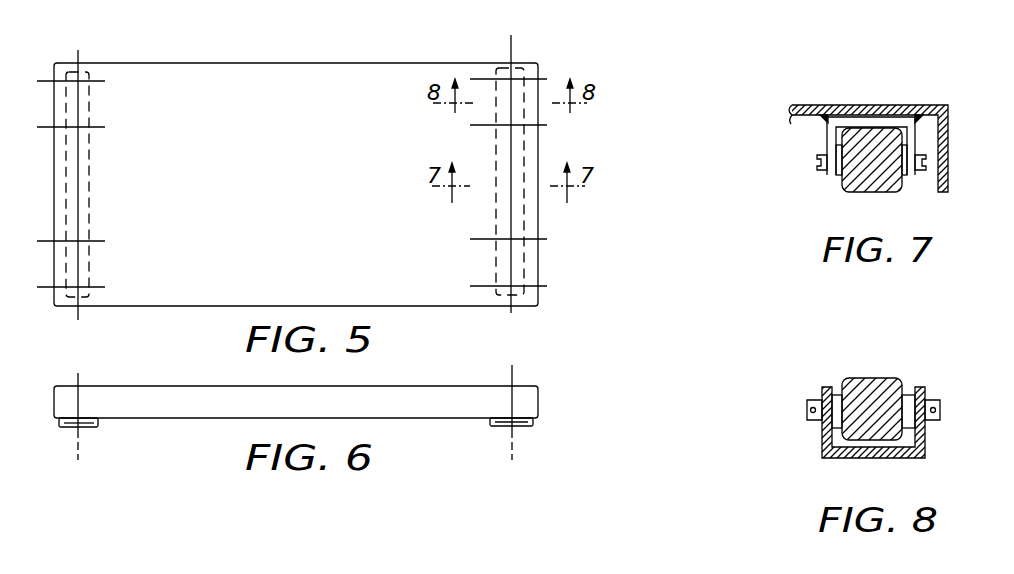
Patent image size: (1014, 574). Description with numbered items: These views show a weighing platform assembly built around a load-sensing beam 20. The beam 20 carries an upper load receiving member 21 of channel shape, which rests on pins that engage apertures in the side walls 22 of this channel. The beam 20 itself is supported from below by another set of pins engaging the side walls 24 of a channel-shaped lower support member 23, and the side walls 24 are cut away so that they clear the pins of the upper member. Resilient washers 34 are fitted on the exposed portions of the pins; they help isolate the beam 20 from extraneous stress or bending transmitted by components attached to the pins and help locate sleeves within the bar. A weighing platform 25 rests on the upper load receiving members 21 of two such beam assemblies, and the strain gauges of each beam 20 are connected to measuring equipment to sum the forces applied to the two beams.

In FIG. 5, the weighing platform 25 is at (178, 70).
In FIG. 7, the weighing platform 25 is at (847, 105).
In FIG. 5, the upper load receiving member 21 is at (517, 155).
In FIG. 7, the upper load receiving member 21 is at (868, 121).
In FIG. 7, the side walls 22 is at (827, 140).
In FIG. 7, the beam 20 is at (872, 192).
In FIG. 8, the beam 20 is at (870, 378).
In FIG. 7, the resilient washers 34 is at (838, 177).
In FIG. 8, the resilient washers 34 is at (908, 393).
In FIG. 8, the lower support member 23 is at (818, 463).
In FIG. 8, the side walls 24 is at (927, 440).